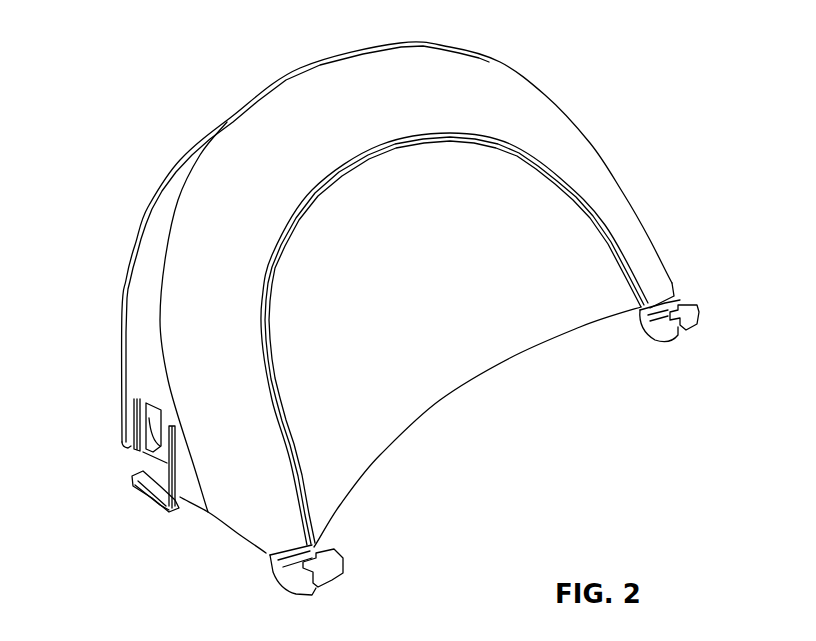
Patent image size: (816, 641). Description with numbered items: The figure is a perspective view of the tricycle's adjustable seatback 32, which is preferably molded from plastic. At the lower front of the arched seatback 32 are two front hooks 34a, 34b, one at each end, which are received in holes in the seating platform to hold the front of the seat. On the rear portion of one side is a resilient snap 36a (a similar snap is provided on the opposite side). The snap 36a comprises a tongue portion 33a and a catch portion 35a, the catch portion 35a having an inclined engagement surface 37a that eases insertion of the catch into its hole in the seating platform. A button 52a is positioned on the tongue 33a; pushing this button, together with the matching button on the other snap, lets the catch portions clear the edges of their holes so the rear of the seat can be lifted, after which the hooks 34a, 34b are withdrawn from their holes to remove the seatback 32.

The adjustable seatback 32 is at (455, 65).
The tongue portion 33a is at (162, 463).
The front hook 34a is at (323, 582).
The front hook 34b is at (700, 325).
The catch portion 35a is at (132, 482).
The snap 36a is at (150, 501).
The inclined engagement surface 37a is at (168, 508).
The button 52a is at (158, 428).